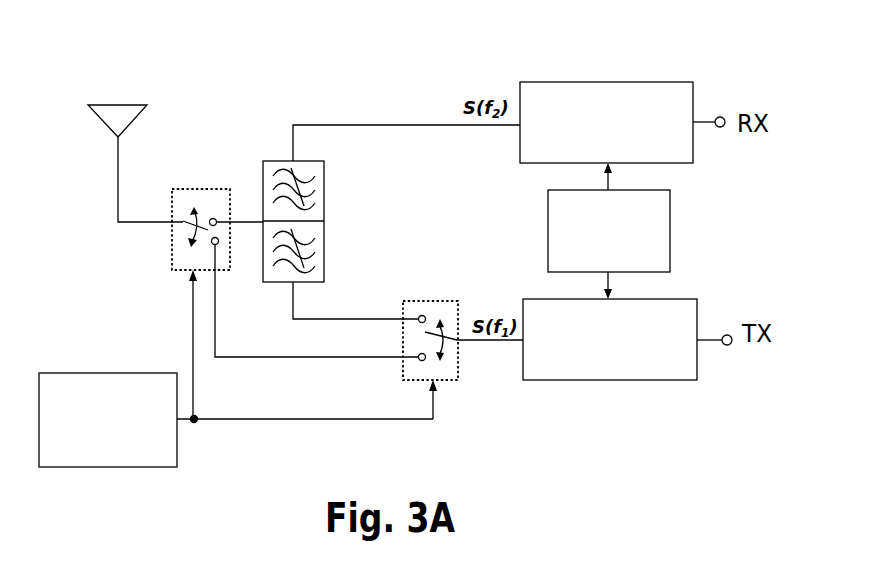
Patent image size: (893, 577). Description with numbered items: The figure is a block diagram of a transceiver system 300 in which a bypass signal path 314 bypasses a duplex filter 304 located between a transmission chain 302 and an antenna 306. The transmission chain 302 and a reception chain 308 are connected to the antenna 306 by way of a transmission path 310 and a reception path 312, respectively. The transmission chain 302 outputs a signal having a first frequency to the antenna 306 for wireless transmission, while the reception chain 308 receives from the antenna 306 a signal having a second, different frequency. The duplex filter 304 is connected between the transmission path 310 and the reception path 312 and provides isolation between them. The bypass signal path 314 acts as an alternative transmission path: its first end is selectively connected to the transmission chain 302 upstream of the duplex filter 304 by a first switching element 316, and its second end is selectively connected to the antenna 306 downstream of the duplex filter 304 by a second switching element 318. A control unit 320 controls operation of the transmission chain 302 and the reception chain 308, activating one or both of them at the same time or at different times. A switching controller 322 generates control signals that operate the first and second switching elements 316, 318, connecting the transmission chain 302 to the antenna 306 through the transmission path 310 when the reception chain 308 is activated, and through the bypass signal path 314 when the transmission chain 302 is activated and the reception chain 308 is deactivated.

The transceiver system 300 is at (76, 43).
The transmission chain 302 is at (627, 339).
The duplex filter 304 is at (324, 178).
The antenna 306 is at (132, 105).
The reception chain 308 is at (622, 122).
The transmission path 310 is at (315, 319).
The reception path 312 is at (330, 125).
The bypass signal path 314 is at (318, 357).
The first switching element 316 is at (450, 380).
The second switching element 318 is at (202, 189).
The control unit 320 is at (609, 231).
The switching controller 322 is at (238, 368).